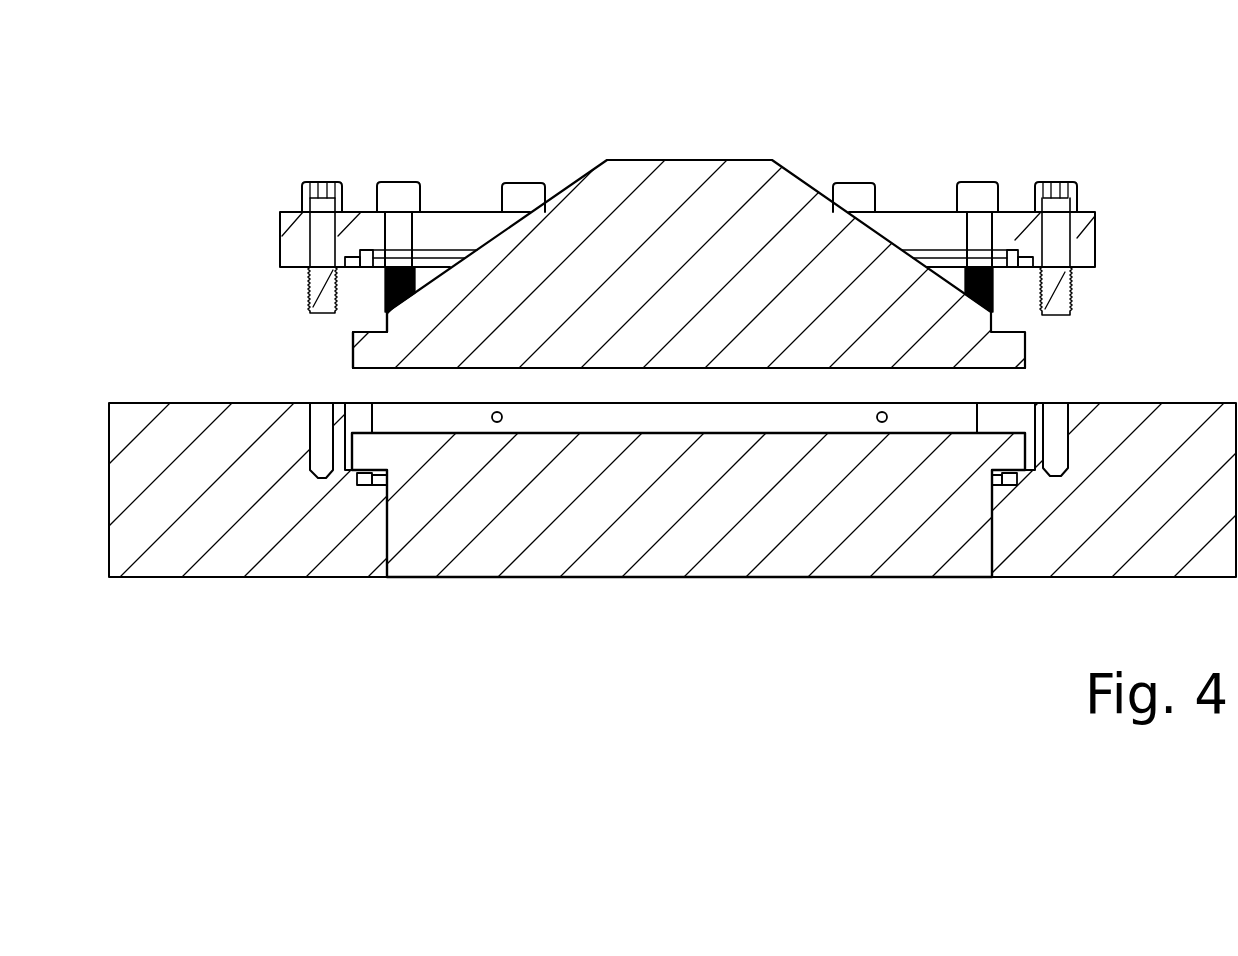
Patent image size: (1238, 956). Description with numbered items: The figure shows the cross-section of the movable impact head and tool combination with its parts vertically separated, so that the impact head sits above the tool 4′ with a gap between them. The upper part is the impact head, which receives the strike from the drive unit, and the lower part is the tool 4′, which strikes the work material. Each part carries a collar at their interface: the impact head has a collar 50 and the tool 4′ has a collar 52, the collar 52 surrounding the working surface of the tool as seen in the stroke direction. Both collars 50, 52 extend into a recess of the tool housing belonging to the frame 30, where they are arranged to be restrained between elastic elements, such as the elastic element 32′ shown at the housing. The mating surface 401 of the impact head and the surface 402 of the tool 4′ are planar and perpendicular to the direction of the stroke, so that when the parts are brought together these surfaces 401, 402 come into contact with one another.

The elastic element 32′ is at (1012, 250).
The collar 50 is at (363, 350).
The surface 401 is at (400, 380).
The frame 30 is at (1085, 254).
The surface 402 is at (740, 432).
The collar 52 is at (372, 458).
The tool 4′ is at (770, 558).